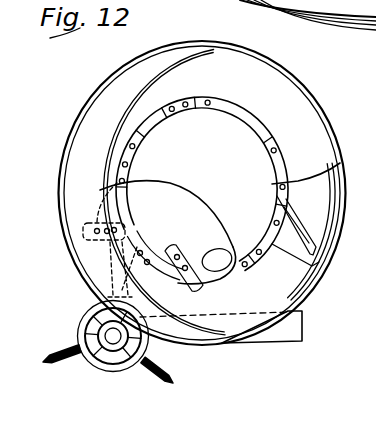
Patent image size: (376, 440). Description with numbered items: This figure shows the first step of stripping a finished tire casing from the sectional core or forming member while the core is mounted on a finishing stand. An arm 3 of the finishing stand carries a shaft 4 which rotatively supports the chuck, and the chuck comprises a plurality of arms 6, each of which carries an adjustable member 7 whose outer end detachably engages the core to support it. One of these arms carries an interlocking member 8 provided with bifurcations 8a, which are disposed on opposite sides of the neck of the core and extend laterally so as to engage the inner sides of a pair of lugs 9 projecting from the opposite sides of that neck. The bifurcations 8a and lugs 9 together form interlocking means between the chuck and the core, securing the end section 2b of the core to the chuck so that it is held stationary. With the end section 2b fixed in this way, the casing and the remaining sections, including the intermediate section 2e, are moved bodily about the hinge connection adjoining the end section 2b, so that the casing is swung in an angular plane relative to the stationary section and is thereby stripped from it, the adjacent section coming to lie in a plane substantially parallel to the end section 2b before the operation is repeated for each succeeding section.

The intermediate section 2e is at (282, 15).
The end section 2b is at (210, 214).
The arm 3 is at (303, 320).
The shaft 4 is at (108, 330).
The arms 6 is at (96, 367).
The adjustable member 7 is at (63, 353).
The interlocking member 8 is at (116, 266).
The bifurcations 8a is at (136, 216).
The lugs 9 is at (110, 240).